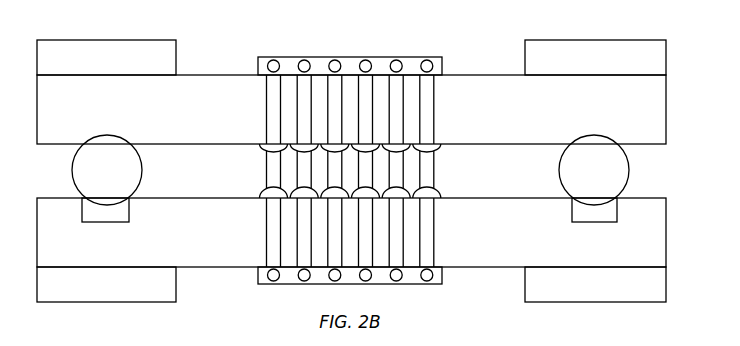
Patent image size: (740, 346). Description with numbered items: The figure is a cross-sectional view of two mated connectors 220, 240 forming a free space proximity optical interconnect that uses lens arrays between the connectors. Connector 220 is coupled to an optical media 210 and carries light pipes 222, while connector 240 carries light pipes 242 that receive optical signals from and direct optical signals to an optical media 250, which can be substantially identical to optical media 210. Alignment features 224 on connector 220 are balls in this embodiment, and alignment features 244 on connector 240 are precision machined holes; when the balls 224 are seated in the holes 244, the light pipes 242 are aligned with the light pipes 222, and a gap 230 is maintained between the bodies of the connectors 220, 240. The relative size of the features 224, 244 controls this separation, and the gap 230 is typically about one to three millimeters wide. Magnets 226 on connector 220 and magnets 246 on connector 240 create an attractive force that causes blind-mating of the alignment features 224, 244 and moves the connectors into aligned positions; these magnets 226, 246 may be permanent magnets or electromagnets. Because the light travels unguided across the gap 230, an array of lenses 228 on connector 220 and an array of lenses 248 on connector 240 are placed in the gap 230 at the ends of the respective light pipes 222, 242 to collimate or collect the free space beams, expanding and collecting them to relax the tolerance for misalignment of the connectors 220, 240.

The optical media 210 is at (427, 57).
The connector 220 is at (183, 119).
The light pipes 222 is at (436, 127).
The alignment features 224 is at (91, 179).
The magnets 226 is at (90, 66).
The array of lenses 228 is at (437, 146).
The gap 230 is at (183, 179).
The connector 240 is at (184, 241).
The light pipes 242 is at (436, 240).
The alignment features 244 is at (115, 226).
The magnets 246 is at (90, 293).
The array of lenses 248 is at (436, 193).
The optical media 250 is at (273, 284).